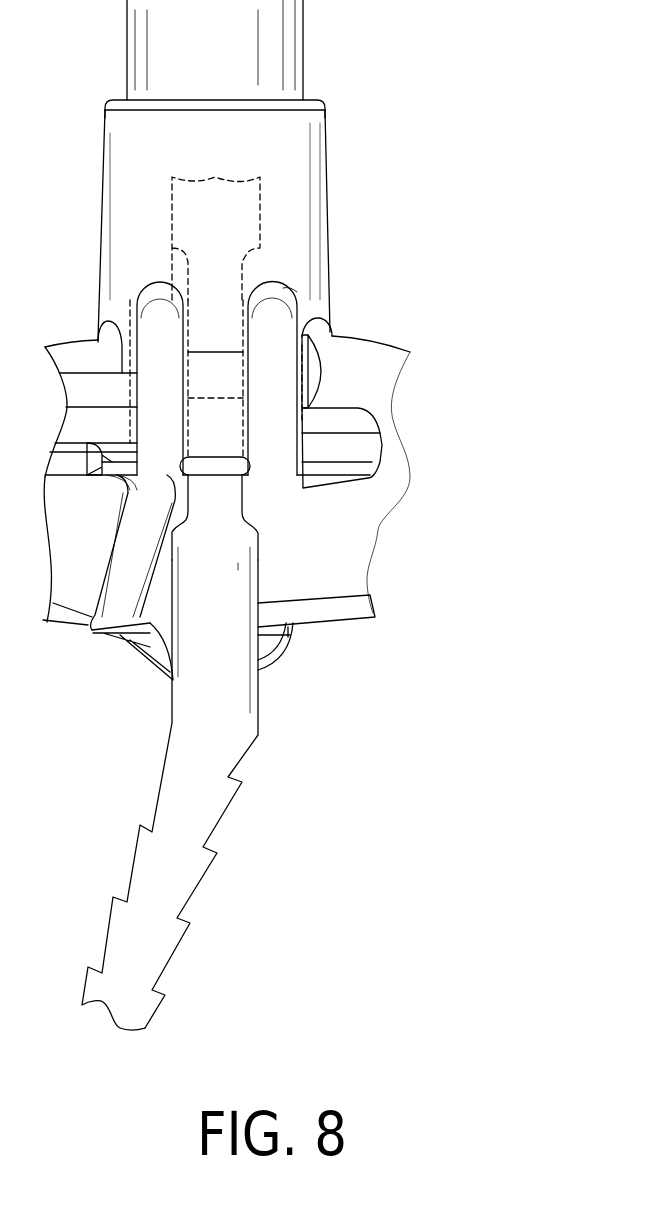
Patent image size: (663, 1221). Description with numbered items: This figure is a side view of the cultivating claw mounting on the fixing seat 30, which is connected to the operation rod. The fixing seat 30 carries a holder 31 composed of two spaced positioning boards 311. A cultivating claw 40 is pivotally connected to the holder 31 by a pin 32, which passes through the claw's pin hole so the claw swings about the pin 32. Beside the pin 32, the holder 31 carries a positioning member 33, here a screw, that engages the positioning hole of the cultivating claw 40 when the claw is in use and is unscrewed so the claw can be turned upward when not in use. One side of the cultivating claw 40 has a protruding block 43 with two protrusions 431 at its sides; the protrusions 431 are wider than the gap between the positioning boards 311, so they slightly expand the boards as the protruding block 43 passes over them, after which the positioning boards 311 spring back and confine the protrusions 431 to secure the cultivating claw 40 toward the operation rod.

The fixing seat 30 is at (362, 331).
The holder 31 is at (267, 283).
The positioning board 311 is at (293, 290).
The pin 32 is at (318, 375).
The positioning member 33 is at (368, 447).
The cultivating claw 40 is at (268, 753).
The protruding block 43 is at (215, 467).
The protrusion 431 is at (250, 466).